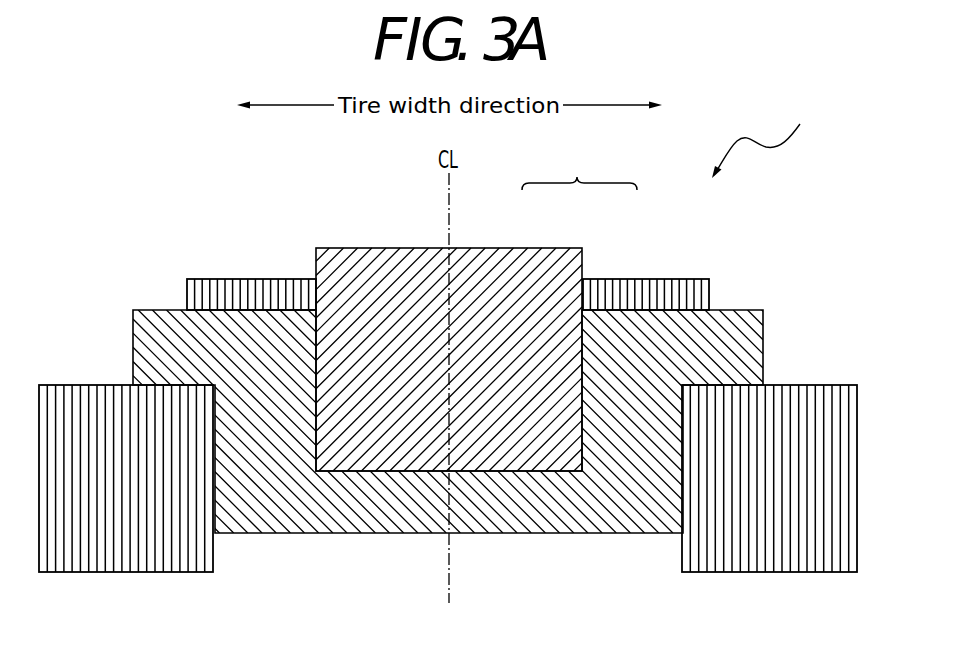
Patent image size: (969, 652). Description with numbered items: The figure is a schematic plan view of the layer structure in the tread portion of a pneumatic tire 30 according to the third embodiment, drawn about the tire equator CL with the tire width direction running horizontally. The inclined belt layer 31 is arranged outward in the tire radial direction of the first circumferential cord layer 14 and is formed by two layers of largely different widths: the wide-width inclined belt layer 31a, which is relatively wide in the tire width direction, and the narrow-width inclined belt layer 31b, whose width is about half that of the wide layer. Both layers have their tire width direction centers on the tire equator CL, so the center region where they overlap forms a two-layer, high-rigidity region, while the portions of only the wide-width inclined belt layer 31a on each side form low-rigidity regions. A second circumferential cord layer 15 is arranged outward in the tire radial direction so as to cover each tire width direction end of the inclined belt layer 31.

The pneumatic tire 30 is at (767, 141).
The inclined belt layer 31 is at (579, 169).
The wide-width inclined belt layer 31a is at (614, 318).
The narrow-width inclined belt layer 31b is at (543, 256).
The first circumferential cord layer 14 is at (238, 290).
The second circumferential cord layer 15 is at (101, 560).